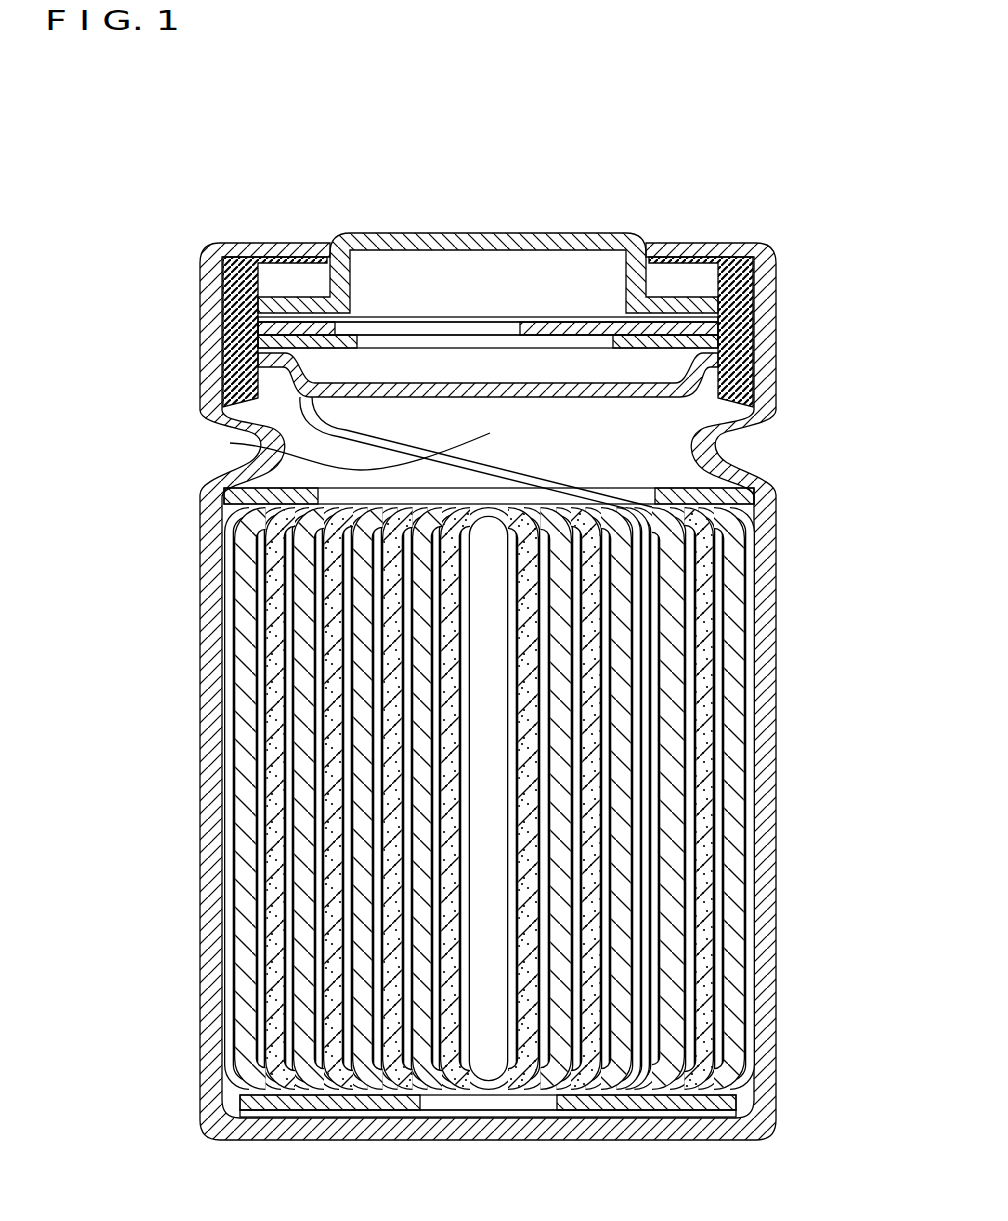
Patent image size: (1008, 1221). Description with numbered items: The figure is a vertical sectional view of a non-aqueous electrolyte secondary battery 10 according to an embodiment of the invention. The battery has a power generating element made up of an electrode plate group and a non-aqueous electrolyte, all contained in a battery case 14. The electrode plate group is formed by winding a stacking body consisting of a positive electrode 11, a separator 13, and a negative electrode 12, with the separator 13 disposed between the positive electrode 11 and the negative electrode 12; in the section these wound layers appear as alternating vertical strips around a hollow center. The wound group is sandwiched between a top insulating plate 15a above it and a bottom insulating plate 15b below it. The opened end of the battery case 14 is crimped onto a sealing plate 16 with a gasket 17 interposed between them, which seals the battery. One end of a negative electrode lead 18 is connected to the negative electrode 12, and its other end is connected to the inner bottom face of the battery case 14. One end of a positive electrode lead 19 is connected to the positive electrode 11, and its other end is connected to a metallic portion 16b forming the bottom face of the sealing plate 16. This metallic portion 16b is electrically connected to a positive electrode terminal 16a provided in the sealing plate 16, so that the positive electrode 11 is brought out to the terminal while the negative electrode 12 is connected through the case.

The battery 10 is at (499, 152).
The positive electrode 11 is at (700, 895).
The negative electrode 12 is at (735, 838).
The separator 13 is at (752, 723).
The battery case 14 is at (214, 664).
The top insulating plate 15a is at (733, 497).
The bottom insulating plate 15b is at (748, 1100).
The sealing plate 16 is at (584, 231).
The positive electrode terminal 16a is at (403, 233).
The metallic portion 16b is at (224, 418).
The gasket 17 is at (747, 318).
The negative electrode lead 18 is at (552, 1118).
The positive electrode lead 19 is at (232, 443).